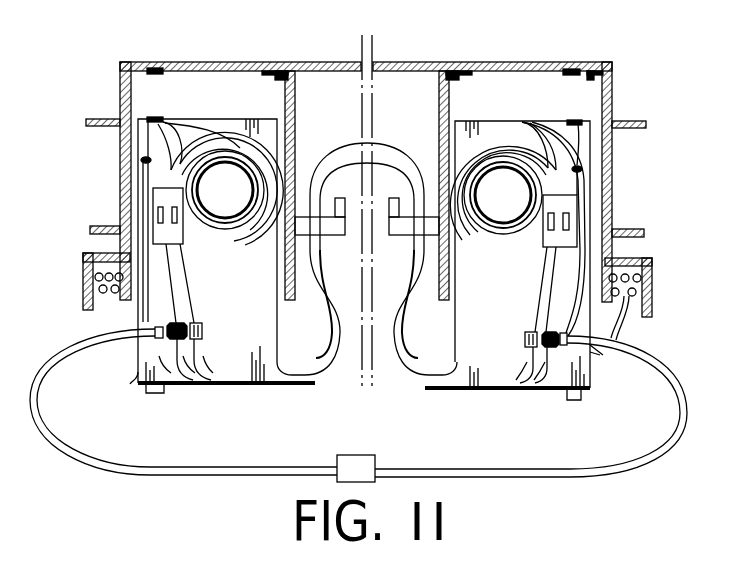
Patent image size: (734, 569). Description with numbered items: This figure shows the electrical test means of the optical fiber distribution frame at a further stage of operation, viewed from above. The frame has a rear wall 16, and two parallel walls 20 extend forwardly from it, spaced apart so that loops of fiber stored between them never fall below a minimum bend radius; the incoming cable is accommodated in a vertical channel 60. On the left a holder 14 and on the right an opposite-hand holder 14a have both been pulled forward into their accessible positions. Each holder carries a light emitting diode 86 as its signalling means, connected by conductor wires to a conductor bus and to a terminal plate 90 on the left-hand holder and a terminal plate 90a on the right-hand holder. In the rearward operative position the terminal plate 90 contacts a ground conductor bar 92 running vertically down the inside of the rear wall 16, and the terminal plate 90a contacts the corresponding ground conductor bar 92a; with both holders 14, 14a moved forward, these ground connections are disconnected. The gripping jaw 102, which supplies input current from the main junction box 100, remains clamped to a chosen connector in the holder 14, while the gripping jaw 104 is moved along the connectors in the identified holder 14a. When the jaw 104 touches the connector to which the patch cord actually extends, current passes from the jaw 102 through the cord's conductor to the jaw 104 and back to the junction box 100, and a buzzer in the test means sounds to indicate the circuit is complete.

The rear wall 16 is at (422, 62).
The wall 20 is at (439, 97).
The holder 14 is at (128, 381).
The holder 14a is at (518, 396).
The terminal plate 90 is at (153, 117).
The terminal plate 90a is at (574, 120).
The ground conductor bar 92 is at (160, 74).
The ground conductor bar 92a is at (572, 75).
The vertical channel 60 is at (83, 278).
The gripping jaw 102 is at (158, 327).
The gripping jaw 104 is at (567, 333).
The main junction box 100 is at (343, 455).
The light emitting diode 86 is at (162, 394).